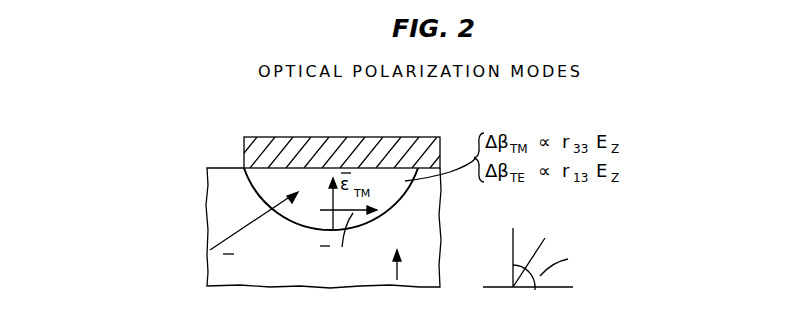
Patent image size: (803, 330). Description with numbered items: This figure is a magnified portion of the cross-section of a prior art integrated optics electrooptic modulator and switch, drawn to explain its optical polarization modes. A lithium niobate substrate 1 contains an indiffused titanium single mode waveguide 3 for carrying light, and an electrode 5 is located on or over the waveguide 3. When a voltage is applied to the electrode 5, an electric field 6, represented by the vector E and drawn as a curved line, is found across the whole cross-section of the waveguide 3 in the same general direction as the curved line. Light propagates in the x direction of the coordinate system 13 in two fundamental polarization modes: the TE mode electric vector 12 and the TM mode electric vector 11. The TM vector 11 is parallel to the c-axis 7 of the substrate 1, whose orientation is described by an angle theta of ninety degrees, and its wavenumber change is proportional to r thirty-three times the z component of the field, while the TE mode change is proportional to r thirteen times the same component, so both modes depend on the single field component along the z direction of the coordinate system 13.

The lithium niobate substrate 1 is at (440, 228).
The single mode waveguide 3 is at (251, 185).
The electrode 5 is at (346, 137).
The electric field 6 is at (237, 237).
The c-axis 7 is at (397, 271).
The TM mode electric vector 11 is at (313, 226).
The TE mode electric vector 12 is at (362, 213).
The coordinate system 13 is at (513, 289).